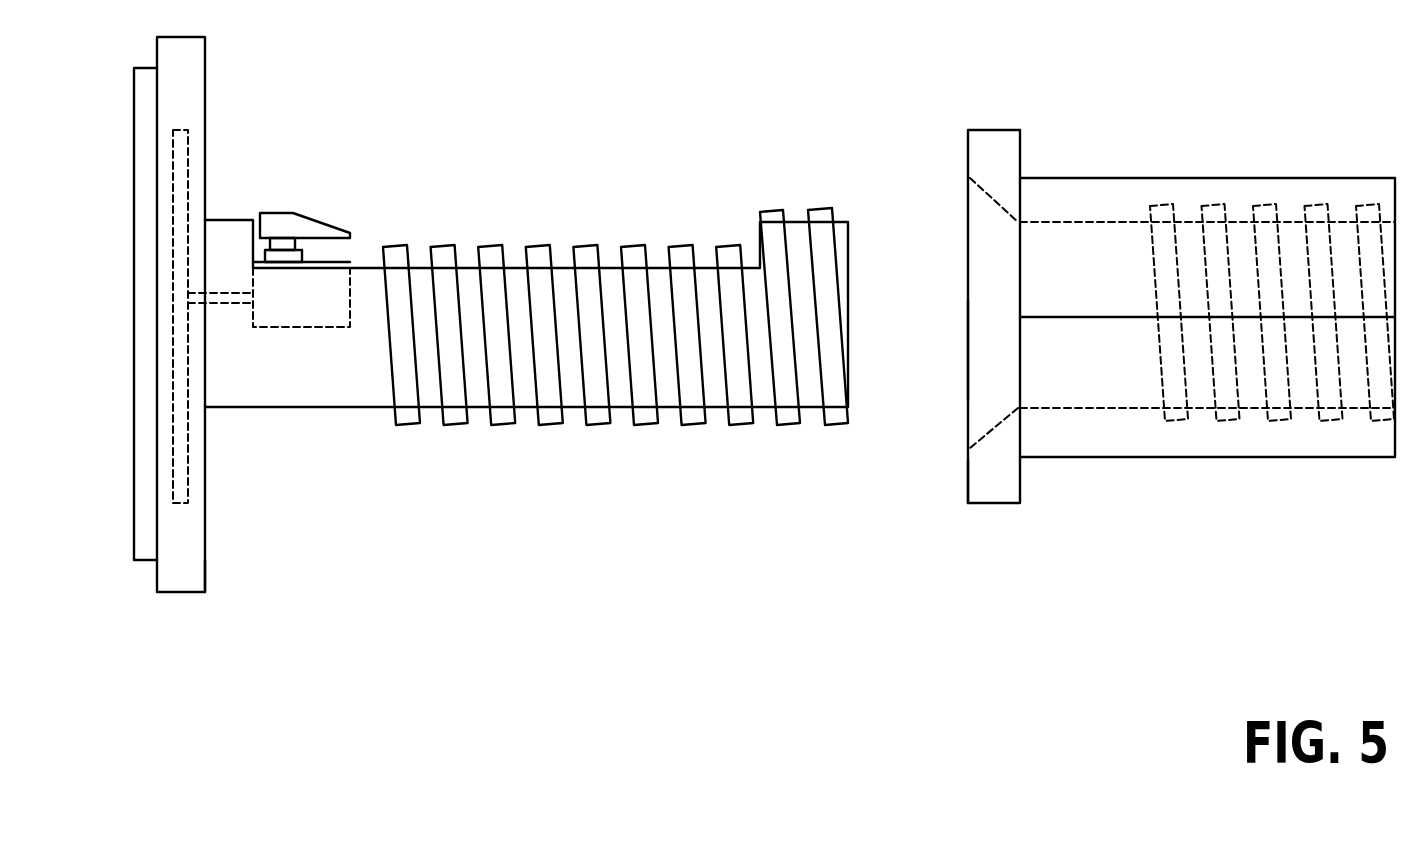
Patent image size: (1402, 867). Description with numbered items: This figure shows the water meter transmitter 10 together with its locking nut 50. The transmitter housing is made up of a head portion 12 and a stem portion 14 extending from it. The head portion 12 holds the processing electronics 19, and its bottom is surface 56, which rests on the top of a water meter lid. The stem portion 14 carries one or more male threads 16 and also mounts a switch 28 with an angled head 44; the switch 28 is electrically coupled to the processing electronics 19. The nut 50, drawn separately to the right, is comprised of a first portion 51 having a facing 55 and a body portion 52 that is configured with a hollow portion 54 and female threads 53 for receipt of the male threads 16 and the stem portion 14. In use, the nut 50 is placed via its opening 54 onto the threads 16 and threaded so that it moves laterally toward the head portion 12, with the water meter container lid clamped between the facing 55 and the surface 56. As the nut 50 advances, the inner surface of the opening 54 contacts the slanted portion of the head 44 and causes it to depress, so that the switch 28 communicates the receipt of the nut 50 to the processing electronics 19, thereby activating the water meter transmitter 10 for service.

The water meter transmitter housing 10 is at (488, 545).
The head portion 12 is at (205, 612).
The stem portion 14 is at (283, 386).
The threads 16 is at (852, 197).
The processing electronics 19 is at (188, 188).
The switch 28 is at (317, 315).
The head 44 is at (293, 213).
The nut 50 is at (1167, 531).
The first portion 51 is at (968, 119).
The body portion 52 is at (1270, 457).
The female threads 53 is at (1028, 208).
The hollow portion 54 is at (953, 348).
The facing 55 is at (968, 483).
The surface 56 is at (205, 541).